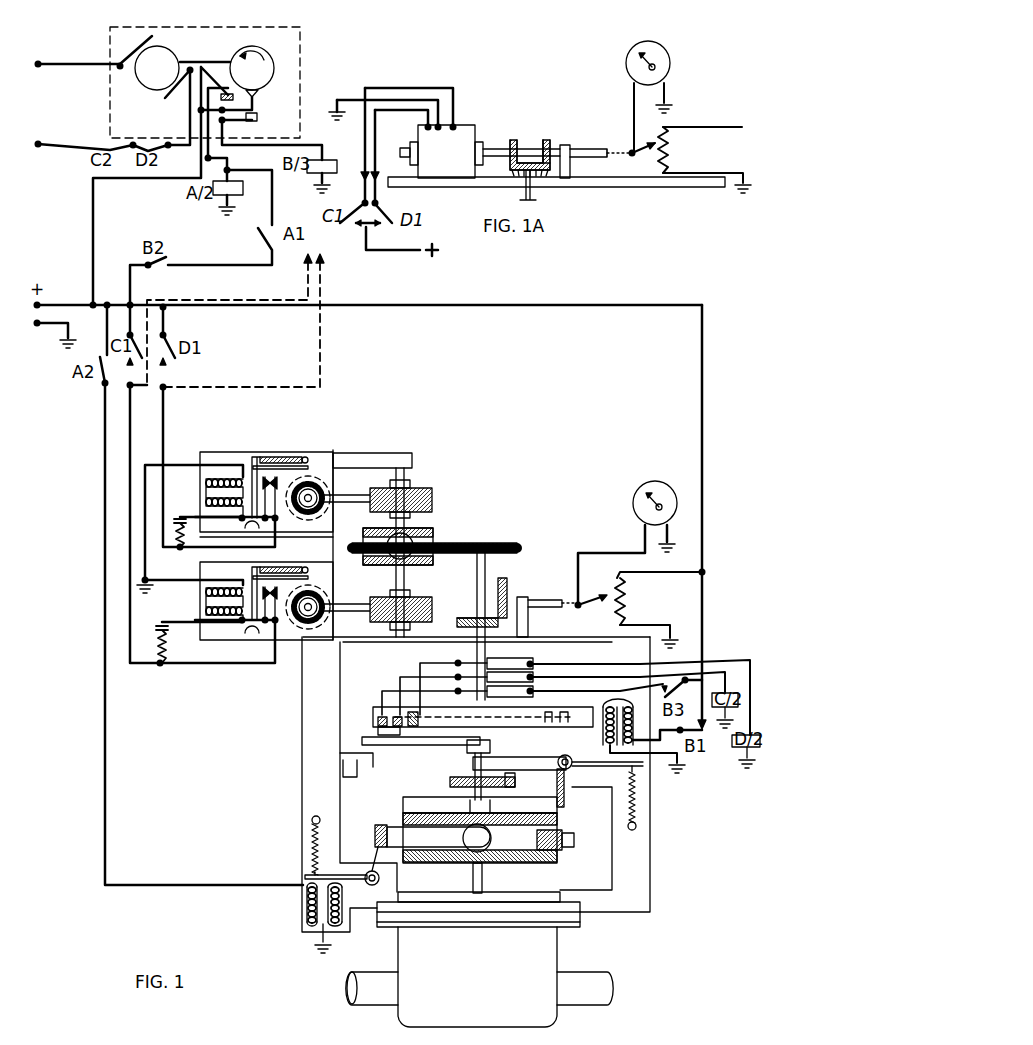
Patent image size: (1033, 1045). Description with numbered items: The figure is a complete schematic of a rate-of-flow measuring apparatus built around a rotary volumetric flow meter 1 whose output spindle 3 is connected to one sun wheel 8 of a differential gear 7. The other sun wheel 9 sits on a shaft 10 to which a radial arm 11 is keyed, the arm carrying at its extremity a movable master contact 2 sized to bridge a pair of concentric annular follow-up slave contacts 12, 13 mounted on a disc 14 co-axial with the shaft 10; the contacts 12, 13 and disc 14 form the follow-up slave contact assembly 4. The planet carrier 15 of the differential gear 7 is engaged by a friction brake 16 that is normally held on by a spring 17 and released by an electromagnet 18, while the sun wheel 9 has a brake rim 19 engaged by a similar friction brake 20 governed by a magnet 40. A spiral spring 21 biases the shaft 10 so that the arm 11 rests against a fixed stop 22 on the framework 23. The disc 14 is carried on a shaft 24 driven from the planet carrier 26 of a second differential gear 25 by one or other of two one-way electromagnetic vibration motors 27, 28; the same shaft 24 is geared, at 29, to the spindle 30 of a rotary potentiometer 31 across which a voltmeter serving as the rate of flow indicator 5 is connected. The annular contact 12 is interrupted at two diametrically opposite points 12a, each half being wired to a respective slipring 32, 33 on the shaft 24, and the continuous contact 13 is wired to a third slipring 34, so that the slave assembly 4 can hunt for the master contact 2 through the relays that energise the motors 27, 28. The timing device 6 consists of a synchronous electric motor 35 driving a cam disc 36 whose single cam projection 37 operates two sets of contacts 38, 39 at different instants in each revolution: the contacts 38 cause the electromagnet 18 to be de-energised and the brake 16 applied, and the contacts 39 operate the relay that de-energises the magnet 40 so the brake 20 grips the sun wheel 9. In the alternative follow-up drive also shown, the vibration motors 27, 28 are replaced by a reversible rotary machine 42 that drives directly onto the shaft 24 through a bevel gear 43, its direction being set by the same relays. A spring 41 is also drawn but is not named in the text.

In FIG. 1, the volumetric flow meter 1 is at (482, 963).
In FIG. 1, the movable master contact 2 is at (398, 745).
In FIG. 1, the output spindle 3 is at (473, 876).
In FIG. 1, the follow-up slave contact assembly 4 is at (521, 736).
In FIG. 1A, the rate of flow indicator 5 is at (626, 63).
In FIG. 1, the rate of flow indicator 5 is at (632, 503).
In FIG. 1, the timing device 6 is at (204, 25).
In FIG. 1, the differential gear 7 is at (386, 814).
In FIG. 1, the sun wheel 8 is at (515, 862).
In FIG. 1, the sun wheel 9 is at (418, 805).
In FIG. 1, the shaft 10 is at (505, 785).
In FIG. 1, the radial arm 11 is at (425, 748).
In FIG. 1, the annular follow-up slave contact 12 is at (377, 720).
In FIG. 1, the interruption points 12a is at (413, 712).
In FIG. 1, the annular follow-up slave contact 13 is at (408, 745).
In FIG. 1, the disc 14 is at (375, 712).
In FIG. 1, the planet carrier 15 is at (436, 846).
In FIG. 1, the friction brake 16 is at (374, 832).
In FIG. 1, the spring 17 is at (308, 838).
In FIG. 1, the electromagnet 18 is at (305, 910).
In FIG. 1, the brake rim 19 is at (440, 805).
In FIG. 1, the friction brake 20 is at (566, 795).
In FIG. 1, the spiral spring 21 is at (470, 752).
In FIG. 1, the fixed stop 22 is at (350, 770).
In FIG. 1, the framework 23 is at (302, 770).
In FIG. 1A, the shaft 24 is at (524, 196).
In FIG. 1, the shaft 24 is at (477, 588).
In FIG. 1, the differential gear 25 is at (436, 528).
In FIG. 1, the planet carrier 26 is at (438, 553).
In FIG. 1, the one-way electromagnetic vibration motor 27 is at (272, 448).
In FIG. 1, the one-way electromagnetic vibration motor 28 is at (336, 590).
In FIG. 1A, the gearing 29 is at (546, 138).
In FIG. 1, the gearing 29 is at (510, 596).
In FIG. 1A, the spindle 30 is at (583, 147).
In FIG. 1, the spindle 30 is at (546, 597).
In FIG. 1A, the rotary potentiometer 31 is at (680, 150).
In FIG. 1, the rotary potentiometer 31 is at (628, 603).
In FIG. 1, the slipring 32 is at (458, 663).
In FIG. 1, the slipring 33 is at (458, 677).
In FIG. 1, the slipring 34 is at (458, 691).
In FIG. 1, the synchronous electric motor 35 is at (166, 78).
In FIG. 1, the cam disc 36 is at (261, 78).
In FIG. 1, the cam projection 37 is at (258, 94).
In FIG. 1, the contacts 38 is at (221, 98).
In FIG. 1, the contacts 39 is at (258, 118).
In FIG. 1, the magnet 40 is at (600, 740).
In FIG. 1, the spring 41 is at (640, 798).
In FIG. 1A, the reversible rotary machine 42 is at (456, 162).
In FIG. 1A, the bevel gear 43 is at (515, 138).